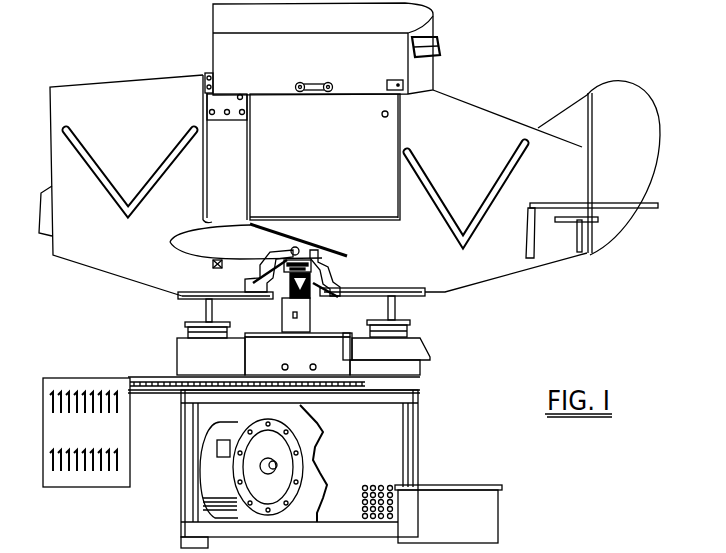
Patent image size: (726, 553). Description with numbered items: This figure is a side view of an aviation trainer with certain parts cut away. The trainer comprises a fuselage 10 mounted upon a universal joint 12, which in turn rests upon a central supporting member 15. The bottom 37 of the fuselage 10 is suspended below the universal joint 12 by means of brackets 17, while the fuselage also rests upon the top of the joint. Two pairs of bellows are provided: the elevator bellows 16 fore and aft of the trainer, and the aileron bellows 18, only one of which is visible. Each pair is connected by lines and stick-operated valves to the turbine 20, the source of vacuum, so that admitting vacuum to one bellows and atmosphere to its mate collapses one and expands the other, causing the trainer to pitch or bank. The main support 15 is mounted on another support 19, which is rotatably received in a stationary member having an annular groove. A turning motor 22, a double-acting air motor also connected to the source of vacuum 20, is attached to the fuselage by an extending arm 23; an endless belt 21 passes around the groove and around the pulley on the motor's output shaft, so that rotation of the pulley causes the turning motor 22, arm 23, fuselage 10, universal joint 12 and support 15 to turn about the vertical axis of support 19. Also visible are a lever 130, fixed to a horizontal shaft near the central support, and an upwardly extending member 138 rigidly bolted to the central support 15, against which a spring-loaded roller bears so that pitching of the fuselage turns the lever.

The fuselage 10 is at (473, 112).
The universal joint 12 is at (290, 256).
The central supporting member 15 is at (267, 281).
The elevator bellows 16 is at (185, 330).
The brackets 17 is at (272, 271).
The aileron bellows 18 is at (292, 331).
The support 19 is at (283, 311).
The turbine 20 is at (207, 477).
The endless belt 21 is at (165, 388).
The turning motor 22 is at (82, 383).
The extending arm 23 is at (145, 377).
The bottom of the trainer fuselage 37 is at (360, 297).
The lever 130 is at (315, 288).
The upwardly extending member 138 is at (295, 276).